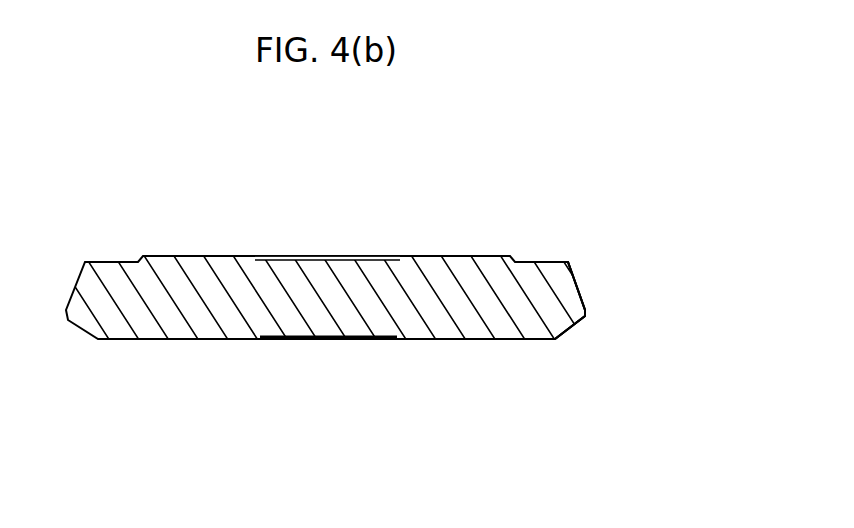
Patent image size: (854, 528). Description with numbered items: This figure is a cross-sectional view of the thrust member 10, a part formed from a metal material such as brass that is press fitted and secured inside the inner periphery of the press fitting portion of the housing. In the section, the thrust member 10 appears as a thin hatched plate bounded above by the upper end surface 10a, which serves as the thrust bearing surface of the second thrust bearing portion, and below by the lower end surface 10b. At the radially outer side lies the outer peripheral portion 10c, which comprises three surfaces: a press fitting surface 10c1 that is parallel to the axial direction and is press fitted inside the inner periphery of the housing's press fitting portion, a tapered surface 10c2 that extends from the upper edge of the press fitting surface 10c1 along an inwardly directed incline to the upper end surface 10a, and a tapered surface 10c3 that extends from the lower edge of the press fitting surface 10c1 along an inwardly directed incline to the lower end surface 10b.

The thrust member 10 is at (540, 254).
The upper end surface 10a is at (433, 256).
The lower end surface 10b is at (437, 340).
The outer peripheral portion 10c is at (597, 318).
The press fitting surface 10c1 is at (588, 307).
The tapered surface 10c2 is at (580, 276).
The tapered surface 10c3 is at (569, 329).